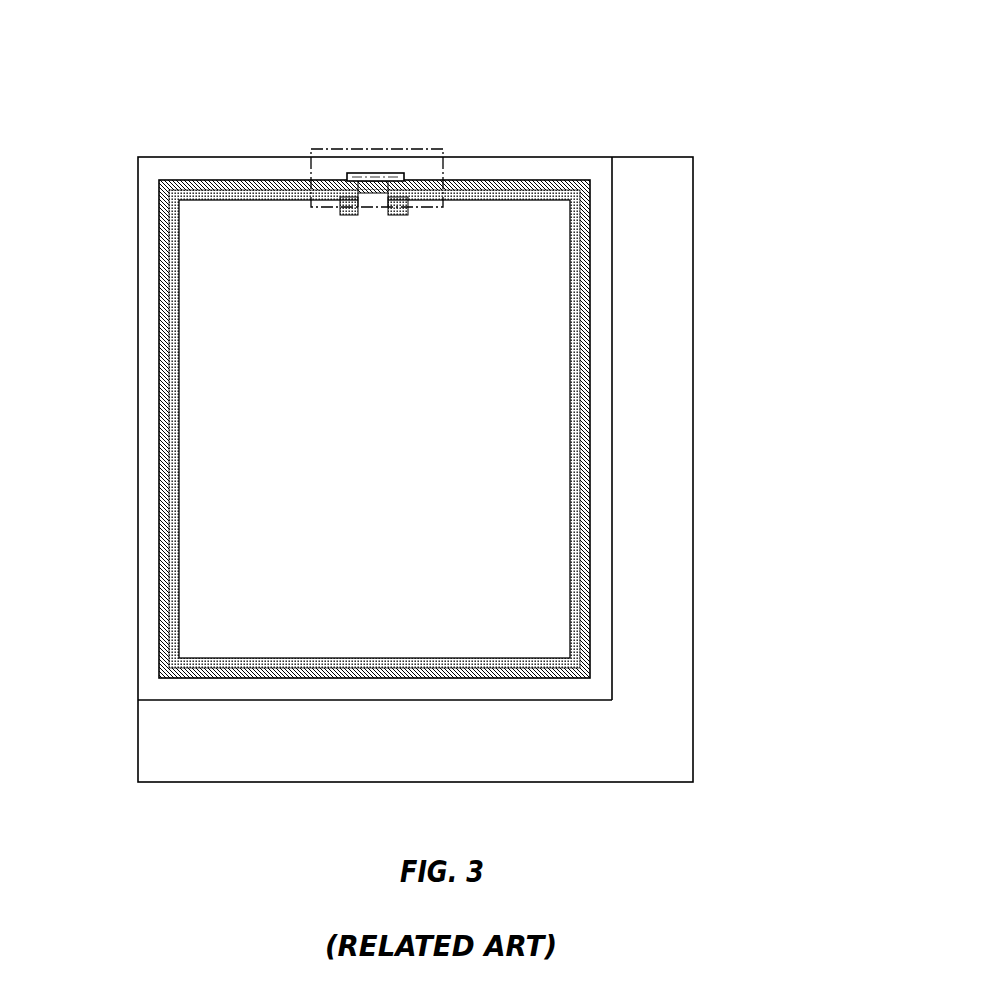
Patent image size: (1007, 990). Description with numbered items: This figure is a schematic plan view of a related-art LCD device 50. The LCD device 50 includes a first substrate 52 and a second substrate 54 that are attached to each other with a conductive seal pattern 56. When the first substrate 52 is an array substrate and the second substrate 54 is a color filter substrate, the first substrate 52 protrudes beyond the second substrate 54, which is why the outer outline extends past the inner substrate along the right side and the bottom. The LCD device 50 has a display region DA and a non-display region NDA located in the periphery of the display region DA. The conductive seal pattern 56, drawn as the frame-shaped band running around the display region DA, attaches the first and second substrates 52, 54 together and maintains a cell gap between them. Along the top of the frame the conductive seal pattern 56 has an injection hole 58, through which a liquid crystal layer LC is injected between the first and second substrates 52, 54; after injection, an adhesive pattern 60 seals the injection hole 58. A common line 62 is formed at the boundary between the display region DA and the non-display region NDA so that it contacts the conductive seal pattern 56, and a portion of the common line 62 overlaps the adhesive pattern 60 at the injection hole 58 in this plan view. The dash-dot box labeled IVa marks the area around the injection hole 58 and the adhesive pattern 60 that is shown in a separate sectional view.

The LCD device 50 is at (716, 348).
The first substrate 52 is at (693, 652).
The second substrate 54 is at (575, 700).
The conductive seal pattern 56 is at (568, 548).
The injection hole 58 is at (375, 210).
The adhesive pattern 60 is at (361, 172).
The common line 62 is at (590, 470).
The liquid crystal layer LC is at (205, 443).
The display region DA is at (505, 215).
The non-display region NDA is at (640, 185).
The section line IVa is at (397, 148).